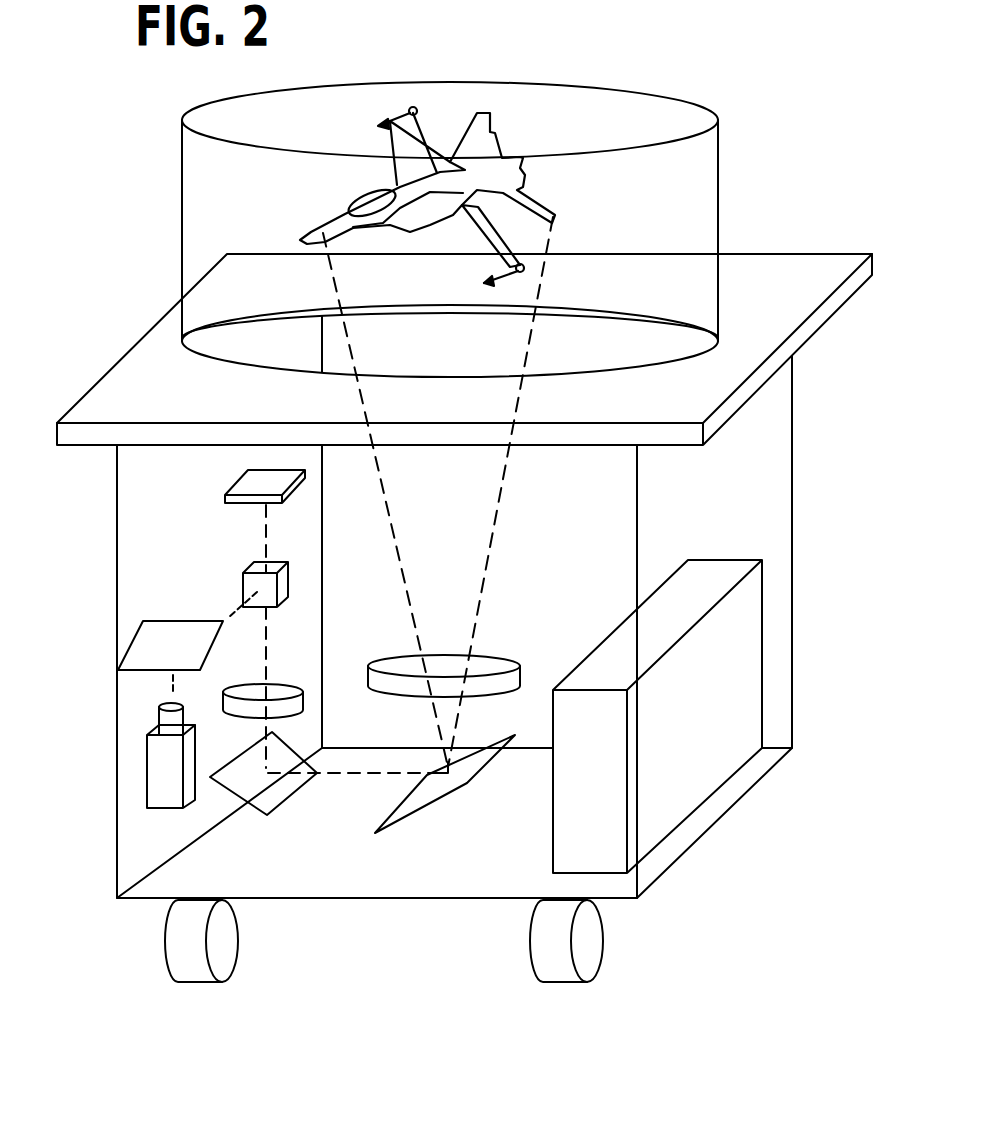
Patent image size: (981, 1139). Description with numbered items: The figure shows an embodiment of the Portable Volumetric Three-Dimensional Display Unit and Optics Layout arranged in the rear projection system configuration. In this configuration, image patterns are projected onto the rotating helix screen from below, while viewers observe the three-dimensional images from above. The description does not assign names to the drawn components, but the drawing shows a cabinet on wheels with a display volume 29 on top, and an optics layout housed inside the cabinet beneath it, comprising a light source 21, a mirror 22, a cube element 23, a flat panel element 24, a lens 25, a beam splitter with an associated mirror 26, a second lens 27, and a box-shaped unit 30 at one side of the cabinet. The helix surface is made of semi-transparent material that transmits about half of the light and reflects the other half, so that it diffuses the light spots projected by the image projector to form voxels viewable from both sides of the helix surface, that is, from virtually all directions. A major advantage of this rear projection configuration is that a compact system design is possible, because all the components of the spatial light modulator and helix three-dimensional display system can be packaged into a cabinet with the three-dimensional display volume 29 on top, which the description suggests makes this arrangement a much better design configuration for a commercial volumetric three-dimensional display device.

The laser light source 21 is at (147, 762).
The mirror 22 is at (118, 670).
The beam splitter cube 23 is at (242, 588).
The spatial light modulator panel 24 is at (226, 497).
The lens 25 is at (293, 686).
The beam splitter and mirror 26 is at (378, 832).
The projection lens 27 is at (502, 655).
The cylindrical display volume 29 is at (445, 83).
The control unit 30 is at (692, 810).